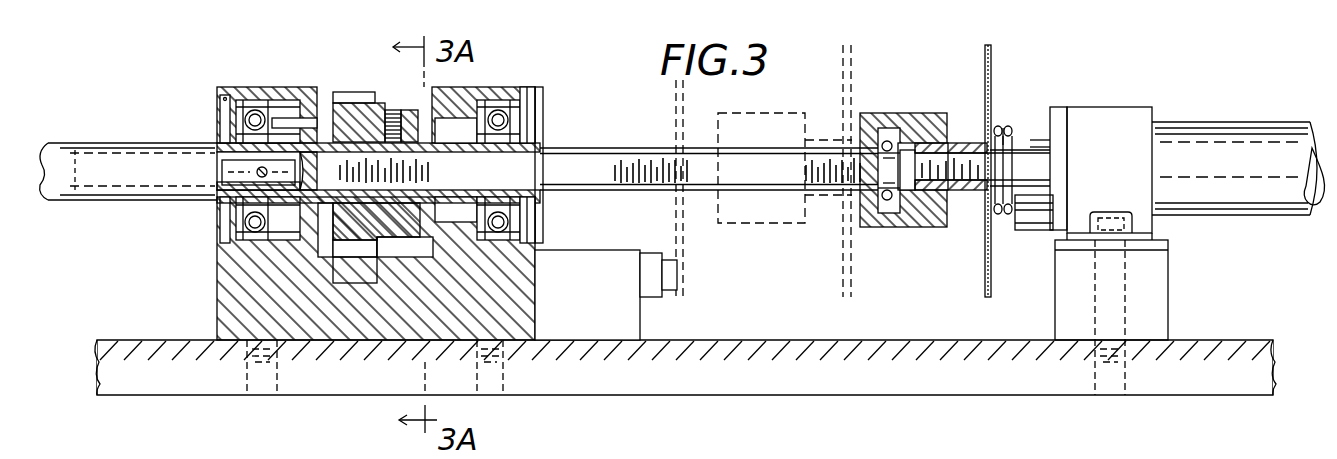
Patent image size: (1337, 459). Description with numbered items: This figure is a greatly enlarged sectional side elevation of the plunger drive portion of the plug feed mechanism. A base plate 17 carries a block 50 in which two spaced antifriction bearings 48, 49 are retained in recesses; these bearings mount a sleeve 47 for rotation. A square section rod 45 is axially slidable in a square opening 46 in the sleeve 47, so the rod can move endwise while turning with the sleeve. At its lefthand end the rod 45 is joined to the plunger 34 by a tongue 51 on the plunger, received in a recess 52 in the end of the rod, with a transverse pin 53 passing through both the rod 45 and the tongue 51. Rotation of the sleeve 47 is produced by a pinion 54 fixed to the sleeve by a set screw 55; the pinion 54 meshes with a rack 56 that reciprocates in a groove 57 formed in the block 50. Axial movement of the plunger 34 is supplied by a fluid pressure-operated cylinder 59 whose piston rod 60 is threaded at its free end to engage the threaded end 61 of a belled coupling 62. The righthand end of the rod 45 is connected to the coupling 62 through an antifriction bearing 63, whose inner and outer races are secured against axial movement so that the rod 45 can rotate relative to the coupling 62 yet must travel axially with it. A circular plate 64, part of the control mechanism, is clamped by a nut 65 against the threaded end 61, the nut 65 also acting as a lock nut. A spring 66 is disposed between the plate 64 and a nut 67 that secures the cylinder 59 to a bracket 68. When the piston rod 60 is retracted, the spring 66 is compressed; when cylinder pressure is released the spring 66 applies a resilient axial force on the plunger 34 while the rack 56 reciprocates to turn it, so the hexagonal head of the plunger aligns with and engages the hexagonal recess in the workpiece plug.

The base plate 17 is at (753, 373).
The plunger 34 is at (97, 142).
The square section rod 45 is at (590, 160).
The square opening 46 is at (500, 183).
The sleeve 47 is at (462, 102).
The antifriction bearing 48 is at (262, 103).
The antifriction bearing 49 is at (506, 100).
The block 50 is at (533, 297).
The tongue 51 is at (240, 135).
The recess 52 is at (230, 197).
The transverse pin 53 is at (288, 142).
The pinion 54 is at (352, 92).
The set screw 55 is at (393, 110).
The rack 56 is at (352, 270).
The groove 57 is at (372, 272).
The fluid pressure-operated cylinder 59 is at (1228, 132).
The piston rod 60 is at (975, 192).
The threaded end 61 is at (950, 143).
The belled coupling 62 is at (746, 113).
The antifriction bearing 63 is at (878, 192).
The circular plate 64 is at (852, 50).
The nut 65 is at (1058, 125).
The spring 66 is at (994, 128).
The nut 67 is at (1033, 226).
The bracket 68 is at (1067, 123).